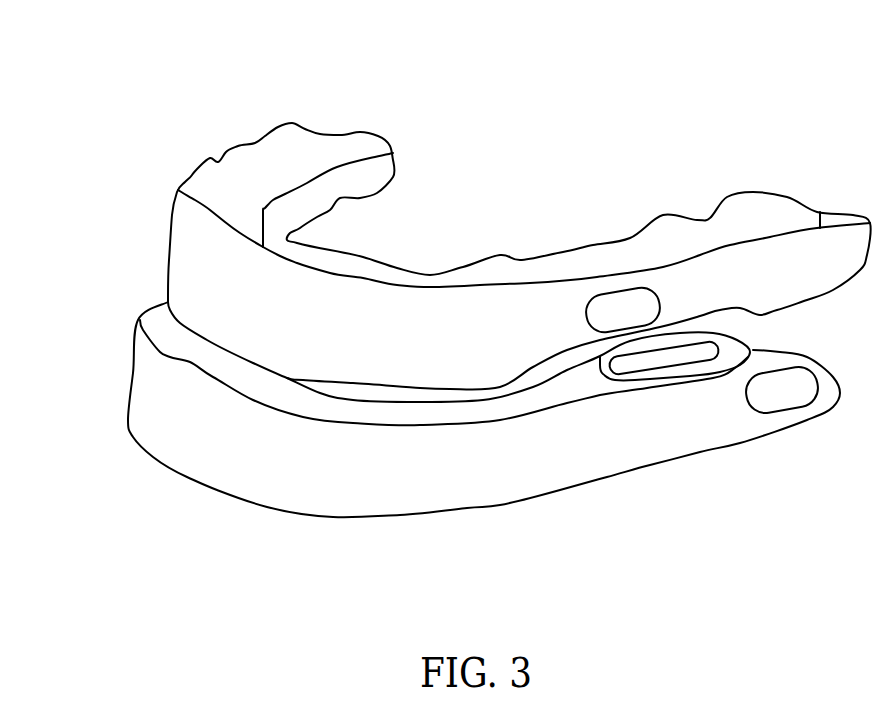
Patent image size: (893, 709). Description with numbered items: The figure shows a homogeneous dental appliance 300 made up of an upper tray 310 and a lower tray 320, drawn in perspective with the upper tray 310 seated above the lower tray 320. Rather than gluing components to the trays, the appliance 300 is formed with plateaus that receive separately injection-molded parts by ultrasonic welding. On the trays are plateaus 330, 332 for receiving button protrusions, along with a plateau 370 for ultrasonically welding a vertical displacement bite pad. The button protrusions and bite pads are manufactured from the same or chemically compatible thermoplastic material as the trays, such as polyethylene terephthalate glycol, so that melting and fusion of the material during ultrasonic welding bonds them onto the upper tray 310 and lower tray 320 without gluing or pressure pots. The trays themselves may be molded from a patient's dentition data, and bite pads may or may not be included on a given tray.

The dental appliance 300 is at (133, 71).
The upper tray 310 is at (467, 302).
The lower tray 320 is at (347, 495).
The plateau for button protrusion 330 is at (617, 307).
The plateau for button protrusion 332 is at (782, 417).
The plateau for ultrasonic welding bite pad 370 is at (648, 363).